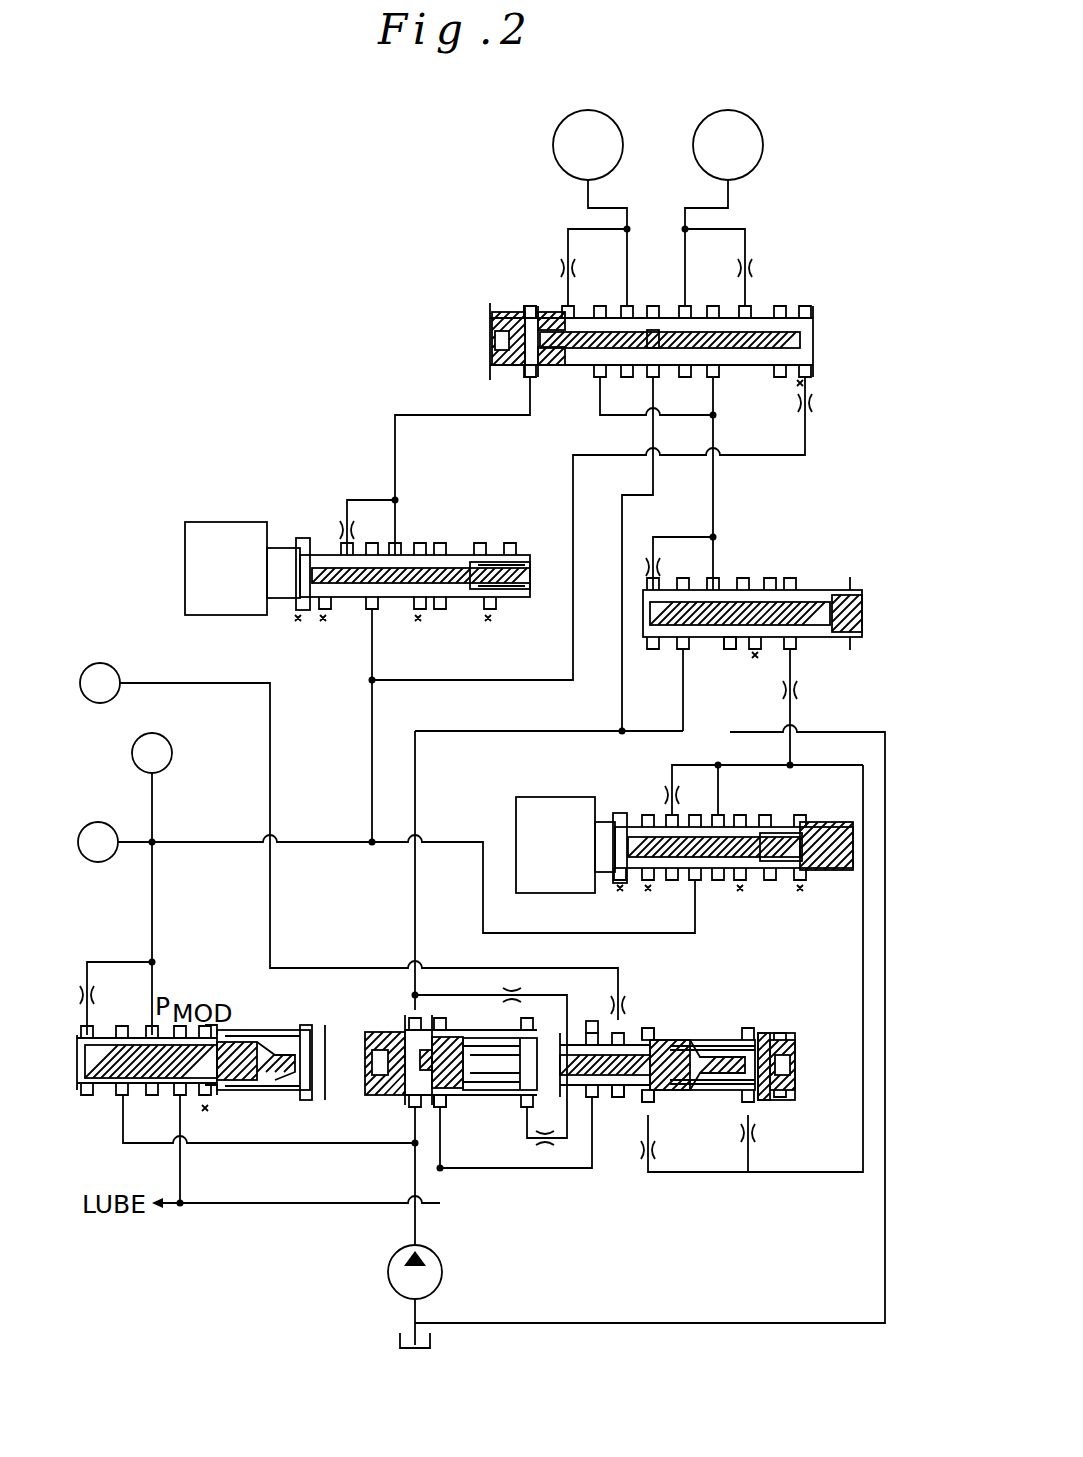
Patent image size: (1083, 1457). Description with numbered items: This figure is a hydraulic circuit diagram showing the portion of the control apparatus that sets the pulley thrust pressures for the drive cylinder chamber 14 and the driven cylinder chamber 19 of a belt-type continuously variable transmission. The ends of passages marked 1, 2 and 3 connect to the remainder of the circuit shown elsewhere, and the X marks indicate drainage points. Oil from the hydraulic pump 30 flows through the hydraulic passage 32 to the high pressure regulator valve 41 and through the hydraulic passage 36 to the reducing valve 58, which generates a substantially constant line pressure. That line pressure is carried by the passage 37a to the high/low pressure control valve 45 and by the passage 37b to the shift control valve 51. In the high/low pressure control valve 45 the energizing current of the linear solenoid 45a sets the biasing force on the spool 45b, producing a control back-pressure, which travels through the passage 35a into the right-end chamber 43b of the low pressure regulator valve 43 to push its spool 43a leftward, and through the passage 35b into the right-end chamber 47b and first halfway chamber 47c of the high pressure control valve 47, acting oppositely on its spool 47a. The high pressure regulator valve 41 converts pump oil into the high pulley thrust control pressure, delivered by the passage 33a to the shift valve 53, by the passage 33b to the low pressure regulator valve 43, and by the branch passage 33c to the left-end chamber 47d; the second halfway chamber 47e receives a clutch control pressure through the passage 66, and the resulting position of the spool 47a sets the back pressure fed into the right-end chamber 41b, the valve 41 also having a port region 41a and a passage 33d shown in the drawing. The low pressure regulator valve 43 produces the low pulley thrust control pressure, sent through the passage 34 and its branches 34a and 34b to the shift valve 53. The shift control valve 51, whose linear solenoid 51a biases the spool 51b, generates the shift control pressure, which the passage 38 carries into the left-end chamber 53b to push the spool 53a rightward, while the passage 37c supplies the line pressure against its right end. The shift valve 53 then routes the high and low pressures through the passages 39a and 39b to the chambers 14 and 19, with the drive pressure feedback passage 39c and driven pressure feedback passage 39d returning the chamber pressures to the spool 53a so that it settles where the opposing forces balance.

The passage end mark 1 is at (98, 842).
The passage end mark 2 is at (152, 753).
The passage end mark 3 is at (100, 683).
The drive cylinder chamber 14 is at (711, 165).
The driven cylinder chamber 19 is at (571, 165).
The hydraulic pump 30 is at (440, 1262).
The hydraulic passage 32 is at (418, 1223).
The passage 33a is at (623, 520).
The passage 33b is at (656, 731).
The passage 33c is at (418, 980).
The line pressure passage 33d is at (594, 1170).
The passage 34 is at (714, 487).
The passage 34a is at (600, 395).
The passage 34b is at (718, 407).
The passage 35a is at (791, 710).
The passage 35b is at (863, 925).
The hydraulic passage 36 is at (265, 1145).
The passage 37a is at (298, 846).
The passage 37b is at (372, 722).
The passage 37c is at (461, 683).
The passage 38 is at (426, 413).
The passage 39a is at (731, 189).
The passage 39b is at (591, 189).
The drive pressure feedback passage 39c is at (748, 236).
The driven pressure feedback passage 39d is at (568, 228).
The high pressure regulator valve 41 is at (397, 1012).
The regulator valve port 41a is at (458, 1107).
The right-end chamber 41b is at (535, 1035).
The low pressure regulator valve 43 is at (812, 573).
The spool 43a is at (666, 637).
The right-end chamber 43b is at (803, 642).
The high/low pressure control valve 45 is at (544, 784).
The linear solenoid 45a is at (588, 863).
The spool 45b is at (752, 868).
The high pressure control valve 47 is at (722, 1020).
The spool 47a is at (661, 1105).
The right-end chamber 47b is at (770, 1033).
The first halfway chamber 47c is at (646, 1028).
The left-end chamber 47d is at (590, 1028).
The second halfway chamber 47e is at (624, 1115).
The shift control valve 51 is at (273, 512).
The linear solenoid 51a is at (258, 588).
The spool 51b is at (482, 560).
The shift valve 53 is at (781, 300).
The spool 53a is at (653, 328).
The left-end chamber 53b is at (529, 303).
The reducing valve 58 is at (245, 1015).
The passage 66 is at (205, 683).